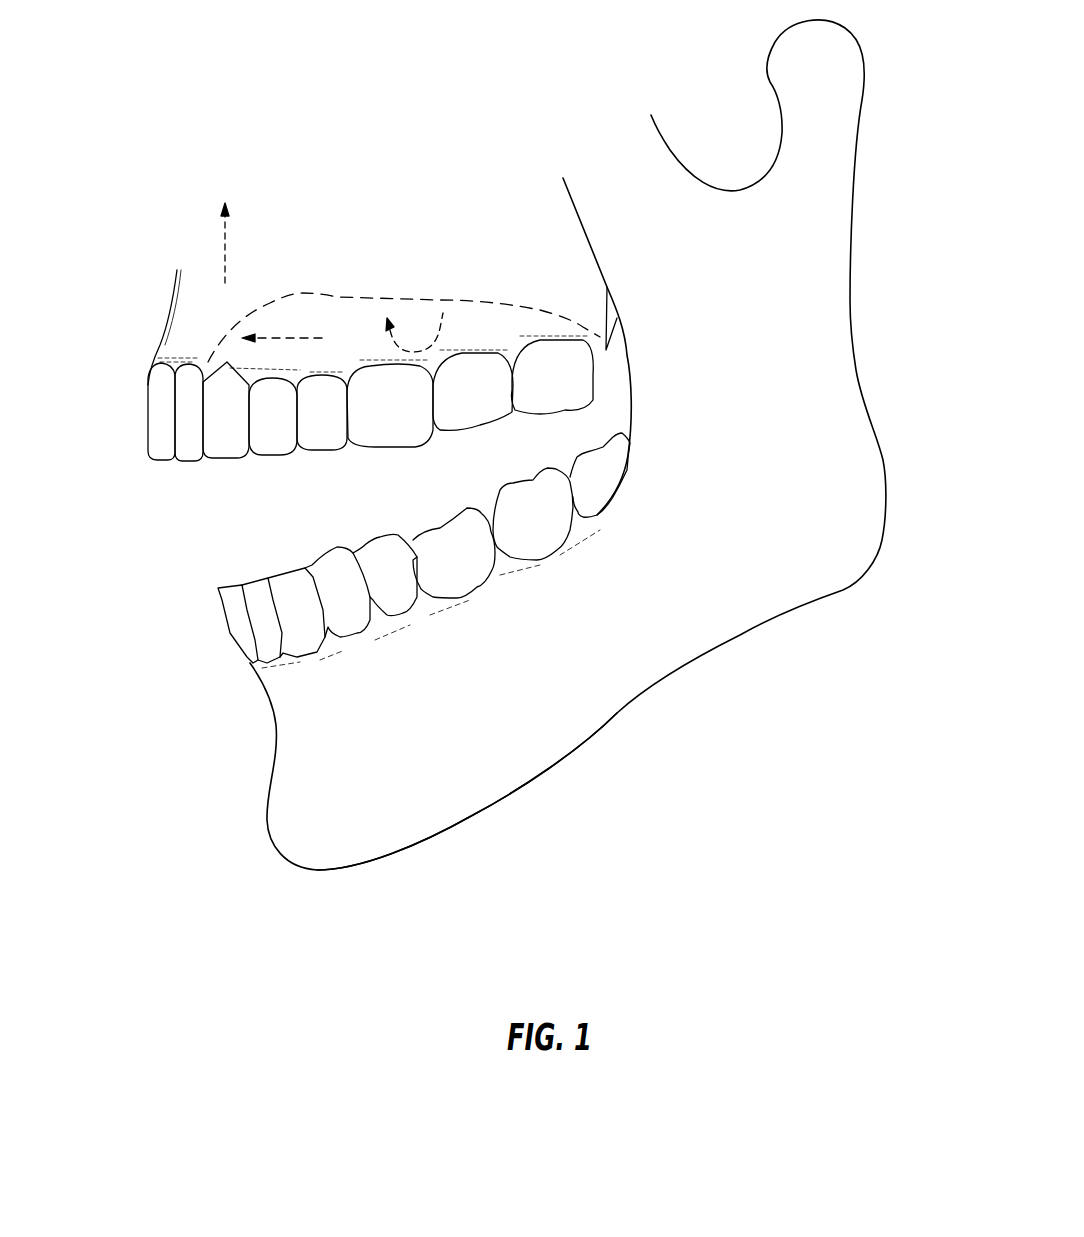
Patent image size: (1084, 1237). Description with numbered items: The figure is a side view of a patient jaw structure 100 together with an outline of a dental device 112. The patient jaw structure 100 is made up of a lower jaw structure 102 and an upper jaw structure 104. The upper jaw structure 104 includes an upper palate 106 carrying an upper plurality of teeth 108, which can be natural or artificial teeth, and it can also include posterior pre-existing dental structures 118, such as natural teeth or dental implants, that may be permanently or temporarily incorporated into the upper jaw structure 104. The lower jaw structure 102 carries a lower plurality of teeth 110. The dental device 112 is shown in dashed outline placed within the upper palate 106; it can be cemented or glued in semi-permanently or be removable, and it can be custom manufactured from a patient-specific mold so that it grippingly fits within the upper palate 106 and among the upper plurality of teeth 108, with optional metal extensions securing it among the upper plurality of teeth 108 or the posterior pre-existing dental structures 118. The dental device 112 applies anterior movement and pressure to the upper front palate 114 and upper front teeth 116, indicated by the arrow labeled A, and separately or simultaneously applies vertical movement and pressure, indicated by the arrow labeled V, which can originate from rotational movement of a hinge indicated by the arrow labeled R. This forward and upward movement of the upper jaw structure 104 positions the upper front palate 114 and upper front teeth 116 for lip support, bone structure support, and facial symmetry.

The patient jaw structure 100 is at (840, 352).
The lower jaw structure 102 is at (455, 805).
The upper jaw structure 104 is at (510, 207).
The upper palate 106 is at (185, 270).
The upper plurality of teeth 108 is at (333, 429).
The lower plurality of teeth 110 is at (237, 625).
The dental device 112 is at (337, 297).
The upper front palate 114 is at (167, 343).
The upper front teeth 116 is at (152, 428).
The posterior pre-existing dental structures 118 is at (477, 405).